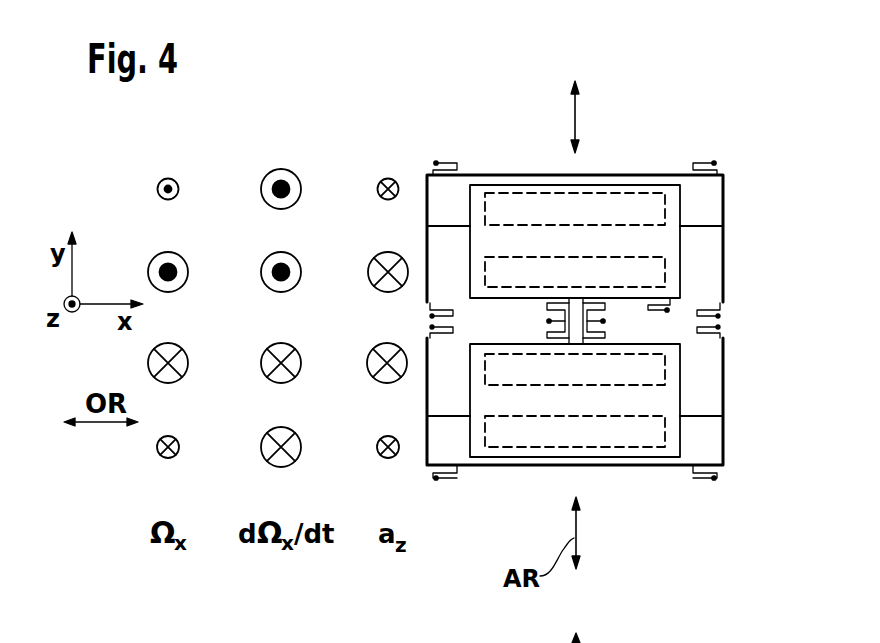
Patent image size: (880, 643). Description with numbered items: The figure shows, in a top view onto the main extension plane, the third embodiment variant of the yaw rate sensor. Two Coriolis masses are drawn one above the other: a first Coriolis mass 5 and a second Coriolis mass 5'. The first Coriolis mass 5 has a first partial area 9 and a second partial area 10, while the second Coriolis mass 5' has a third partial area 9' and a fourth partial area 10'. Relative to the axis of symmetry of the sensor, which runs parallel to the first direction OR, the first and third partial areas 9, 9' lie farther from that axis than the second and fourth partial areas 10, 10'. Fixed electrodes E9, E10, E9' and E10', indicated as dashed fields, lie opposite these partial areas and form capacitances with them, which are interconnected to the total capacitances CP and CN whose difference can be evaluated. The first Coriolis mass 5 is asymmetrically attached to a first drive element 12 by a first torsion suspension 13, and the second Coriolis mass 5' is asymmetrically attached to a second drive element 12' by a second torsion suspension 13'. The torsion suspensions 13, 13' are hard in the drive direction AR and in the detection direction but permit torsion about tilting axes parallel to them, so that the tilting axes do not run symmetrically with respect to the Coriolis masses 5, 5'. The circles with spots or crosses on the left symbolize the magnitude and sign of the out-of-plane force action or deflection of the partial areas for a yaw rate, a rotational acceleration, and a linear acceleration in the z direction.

The first Coriolis mass 5 is at (575, 200).
The second Coriolis mass 5' is at (575, 439).
The first partial area 9 is at (583, 173).
The third partial area 9' is at (588, 471).
The second partial area 10 is at (655, 272).
The fourth partial area 10' is at (661, 369).
The first drive element 12 is at (596, 128).
The second drive element 12' is at (596, 554).
The first torsion suspension 13 is at (575, 160).
The second torsion suspension 13' is at (575, 481).